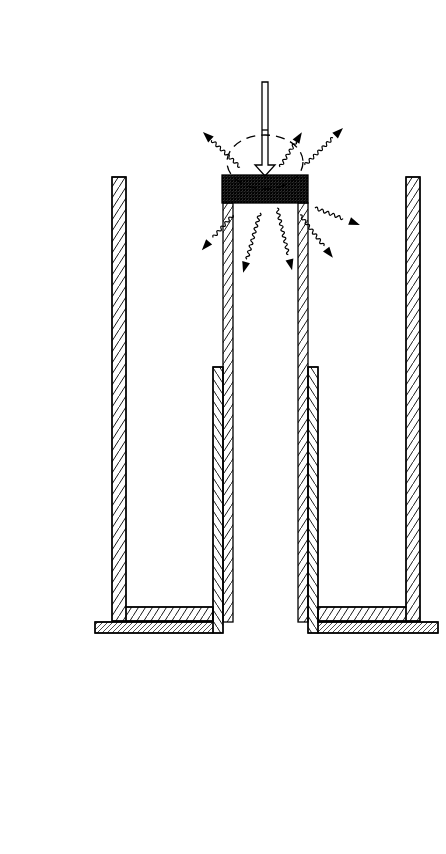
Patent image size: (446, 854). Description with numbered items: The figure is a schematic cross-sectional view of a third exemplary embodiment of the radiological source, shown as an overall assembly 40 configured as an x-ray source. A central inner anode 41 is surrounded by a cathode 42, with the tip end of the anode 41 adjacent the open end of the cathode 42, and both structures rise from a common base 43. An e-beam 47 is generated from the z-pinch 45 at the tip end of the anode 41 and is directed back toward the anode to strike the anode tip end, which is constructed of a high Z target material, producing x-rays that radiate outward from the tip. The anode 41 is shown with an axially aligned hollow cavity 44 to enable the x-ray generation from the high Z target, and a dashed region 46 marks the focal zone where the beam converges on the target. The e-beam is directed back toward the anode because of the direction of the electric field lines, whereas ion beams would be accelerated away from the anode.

The x-ray source assembly 40 is at (136, 57).
The central/inner anode 41 is at (223, 340).
The cathode 42 is at (112, 340).
The base plate 43 is at (168, 633).
The hollow cavity 44 is at (278, 404).
The z-pinch 45 is at (222, 181).
The electron beam focal region 46 is at (254, 134).
The e-beam 47 is at (268, 94).